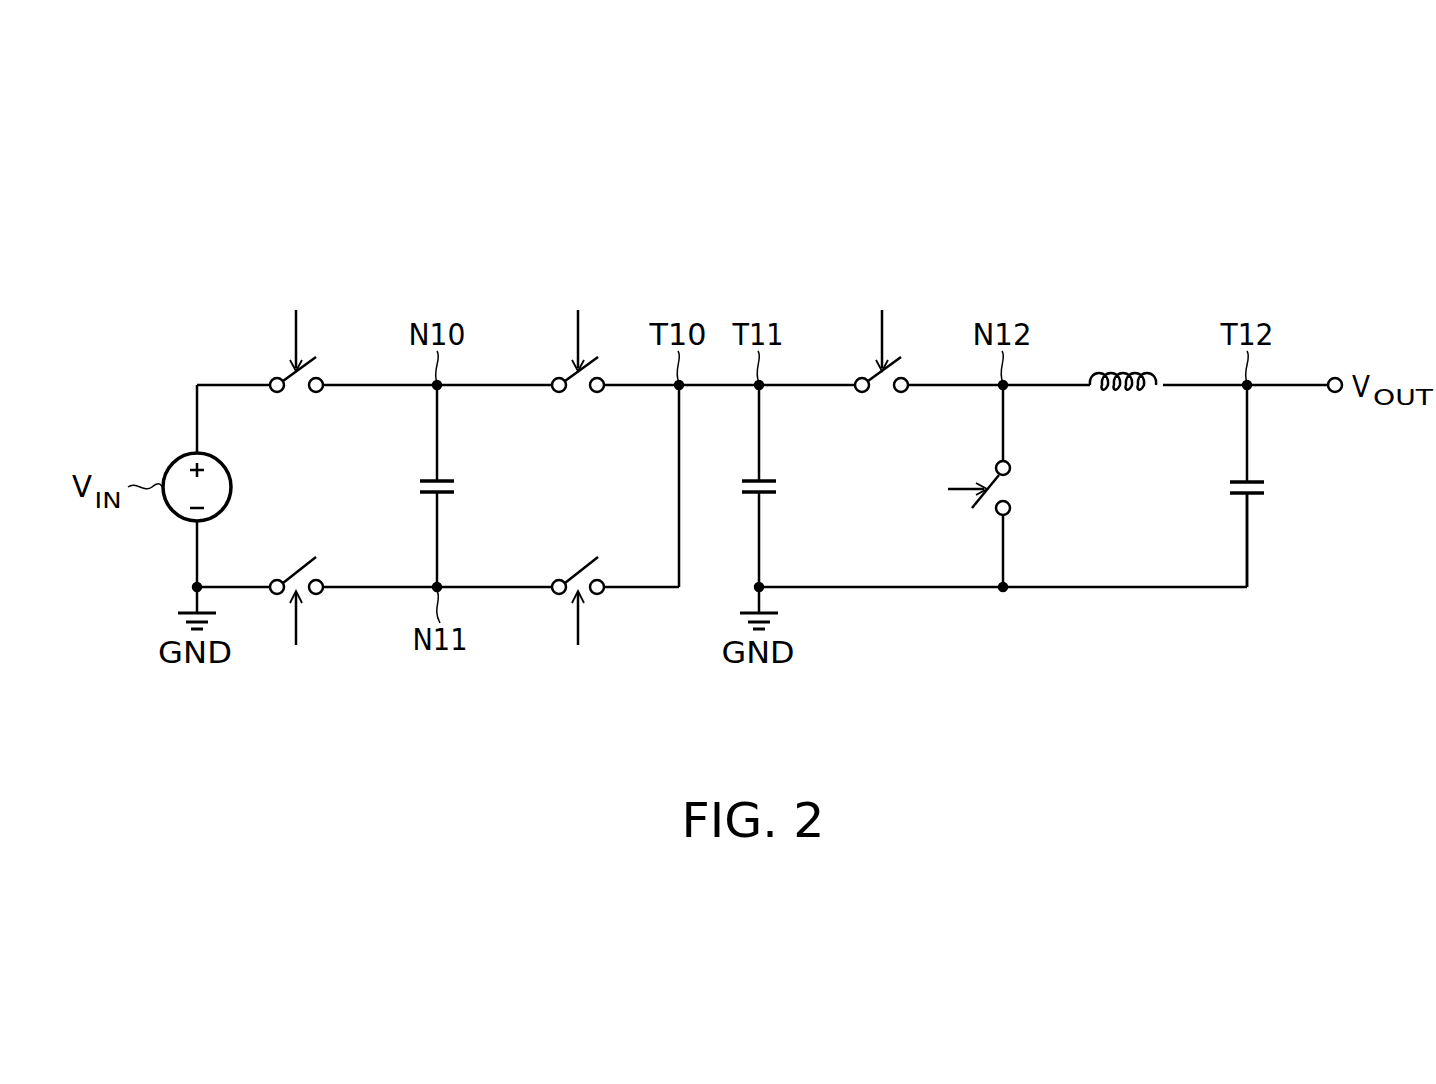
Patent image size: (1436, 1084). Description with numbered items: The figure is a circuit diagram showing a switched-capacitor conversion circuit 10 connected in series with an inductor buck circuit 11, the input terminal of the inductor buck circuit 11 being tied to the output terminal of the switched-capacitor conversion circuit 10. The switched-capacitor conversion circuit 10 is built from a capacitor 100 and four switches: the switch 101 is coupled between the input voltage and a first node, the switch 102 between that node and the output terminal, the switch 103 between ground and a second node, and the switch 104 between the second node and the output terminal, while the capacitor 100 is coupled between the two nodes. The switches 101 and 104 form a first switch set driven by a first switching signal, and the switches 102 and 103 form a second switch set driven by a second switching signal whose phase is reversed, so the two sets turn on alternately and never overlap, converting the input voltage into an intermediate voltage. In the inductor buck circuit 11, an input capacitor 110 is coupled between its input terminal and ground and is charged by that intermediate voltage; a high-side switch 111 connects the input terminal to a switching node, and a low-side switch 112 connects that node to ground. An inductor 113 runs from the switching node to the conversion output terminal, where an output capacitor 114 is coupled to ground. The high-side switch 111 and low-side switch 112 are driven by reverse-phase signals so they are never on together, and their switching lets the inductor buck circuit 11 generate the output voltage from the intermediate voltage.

The switched-capacitor conversion circuit 10 is at (464, 260).
The inductor buck circuit 11 is at (1038, 260).
The capacitor 100 is at (444, 478).
The switch 101 is at (297, 393).
The switch 102 is at (579, 393).
The switch 103 is at (299, 567).
The switch 104 is at (580, 565).
The input capacitor 110 is at (766, 478).
The high-side switch 111 is at (882, 393).
The low-side switch 112 is at (1007, 490).
The inductor 113 is at (1123, 375).
The output capacitor 114 is at (1254, 478).